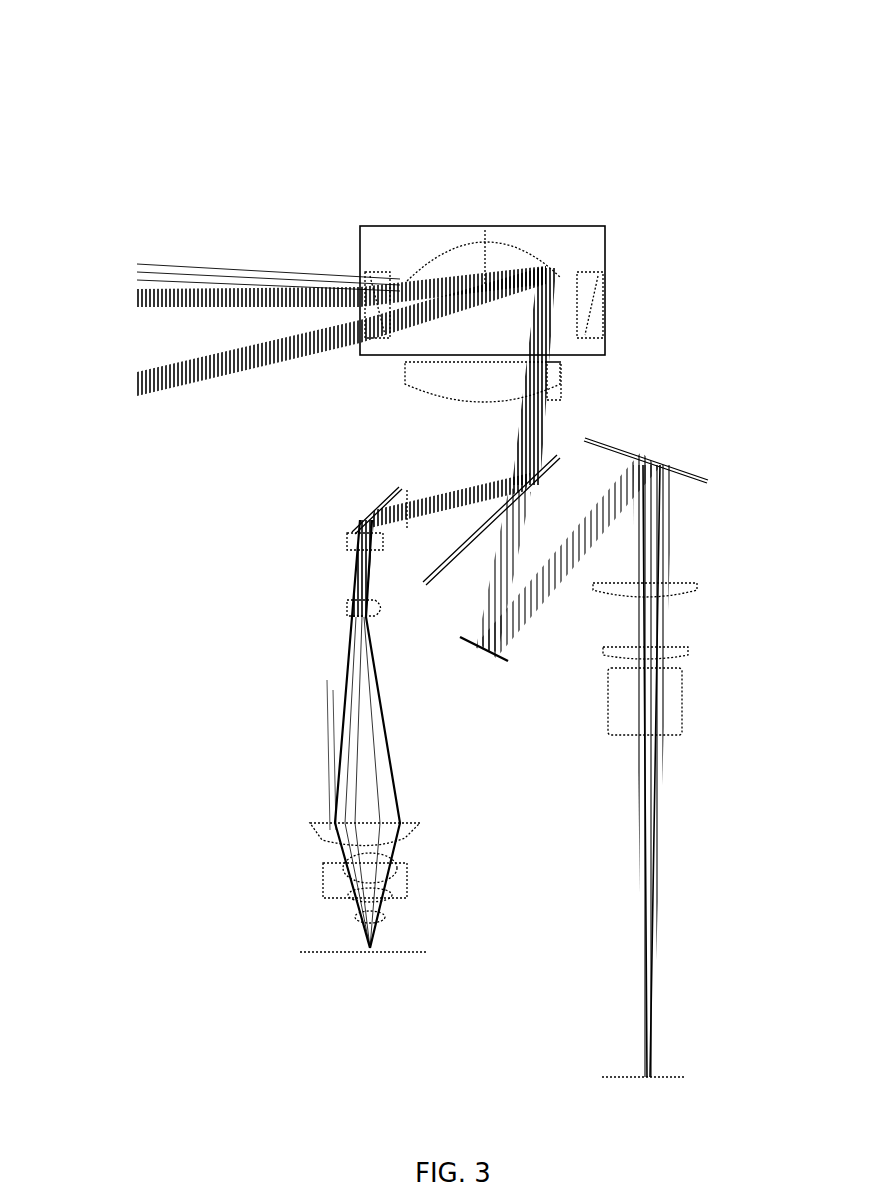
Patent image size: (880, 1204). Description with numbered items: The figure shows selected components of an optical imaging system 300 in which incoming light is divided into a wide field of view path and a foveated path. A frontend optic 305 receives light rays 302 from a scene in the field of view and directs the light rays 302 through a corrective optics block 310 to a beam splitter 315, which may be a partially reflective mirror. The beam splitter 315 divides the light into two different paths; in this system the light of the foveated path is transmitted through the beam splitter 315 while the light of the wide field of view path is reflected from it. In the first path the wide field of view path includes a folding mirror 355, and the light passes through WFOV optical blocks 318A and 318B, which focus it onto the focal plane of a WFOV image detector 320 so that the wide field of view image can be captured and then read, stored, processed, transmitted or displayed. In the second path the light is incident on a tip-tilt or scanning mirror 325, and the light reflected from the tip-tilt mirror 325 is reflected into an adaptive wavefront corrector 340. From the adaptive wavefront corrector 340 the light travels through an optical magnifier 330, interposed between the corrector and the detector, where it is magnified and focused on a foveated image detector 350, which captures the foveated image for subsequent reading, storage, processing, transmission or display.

The optical system 300 is at (538, 52).
The light rays 302 is at (133, 378).
The frontend optic 305 is at (608, 275).
The corrective optics block 310 is at (415, 395).
The beam splitter 315 is at (553, 448).
The WFOV optical block 318A is at (350, 600).
The WFOV optical block 318B is at (333, 918).
The WFOV image detector 320 is at (292, 950).
The tip-tilt mirror 325 is at (486, 662).
The optical magnifier 330 is at (685, 727).
The adaptive wavefront corrector 340 is at (647, 448).
The foveated image detector 350 is at (695, 1077).
The folding mirror 355 is at (375, 504).